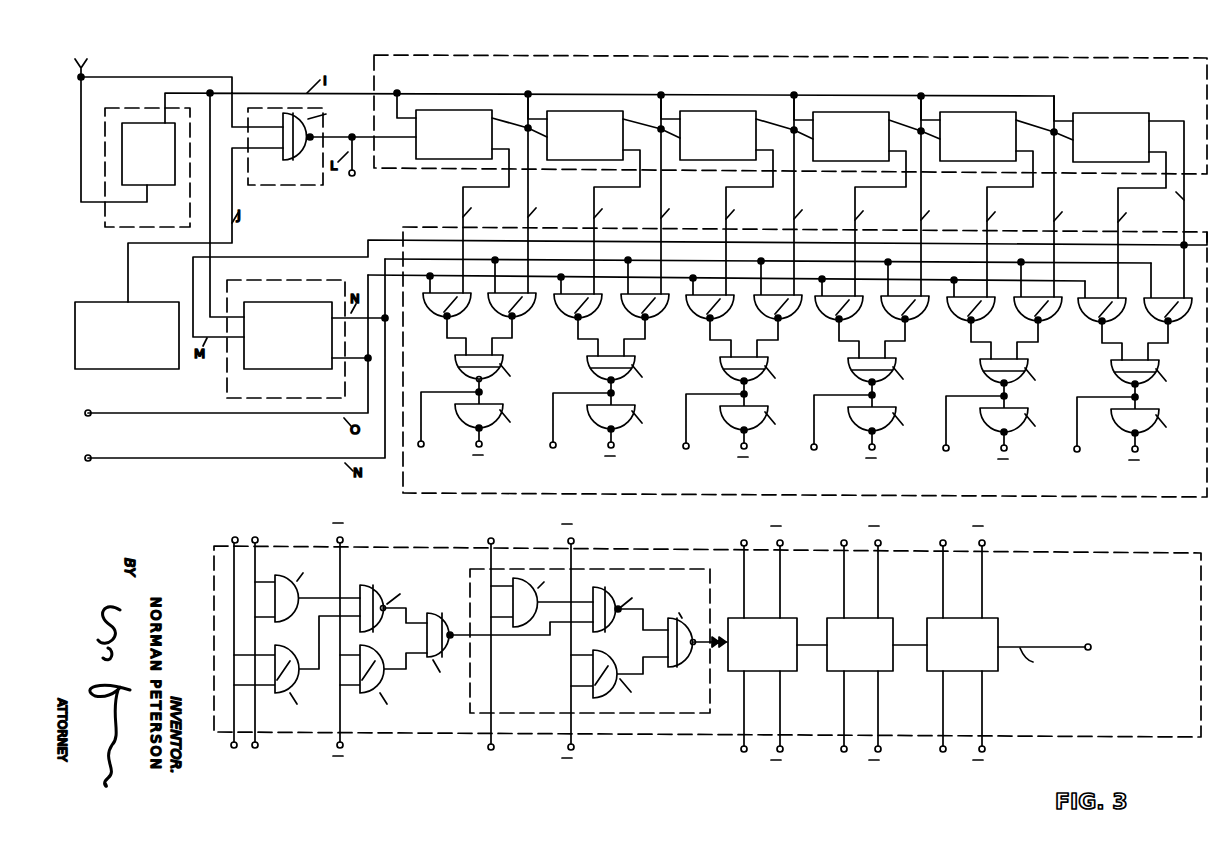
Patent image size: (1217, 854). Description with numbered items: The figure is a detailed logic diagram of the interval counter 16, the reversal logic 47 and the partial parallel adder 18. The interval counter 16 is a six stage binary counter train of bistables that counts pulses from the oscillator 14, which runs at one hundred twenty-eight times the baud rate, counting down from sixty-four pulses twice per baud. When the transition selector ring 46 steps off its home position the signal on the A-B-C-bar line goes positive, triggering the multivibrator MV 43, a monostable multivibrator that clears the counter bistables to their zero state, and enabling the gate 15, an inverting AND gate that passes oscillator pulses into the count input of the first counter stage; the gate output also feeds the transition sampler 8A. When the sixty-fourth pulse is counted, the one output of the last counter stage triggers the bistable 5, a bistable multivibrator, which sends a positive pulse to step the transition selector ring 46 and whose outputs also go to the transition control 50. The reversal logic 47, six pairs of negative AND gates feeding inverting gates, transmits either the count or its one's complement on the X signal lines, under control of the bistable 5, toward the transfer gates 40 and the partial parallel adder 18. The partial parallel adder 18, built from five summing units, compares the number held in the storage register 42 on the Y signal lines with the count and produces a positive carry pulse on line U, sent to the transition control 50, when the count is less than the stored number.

The transition selector ring 46 is at (76, 40).
The multivibrator MV 43 is at (147, 167).
The gate 15 is at (302, 146).
The transition sampler 8A is at (360, 205).
The interval counter 16 is at (790, 176).
The oscillator 14 is at (127, 335).
The bistable 5 is at (286, 339).
The reversal logic 47 is at (1008, 522).
The transfer gates 40 is at (1162, 463).
The partial parallel adder 18 is at (707, 649).
The storage register 42 is at (1008, 770).
The transition control 50 is at (626, 569).